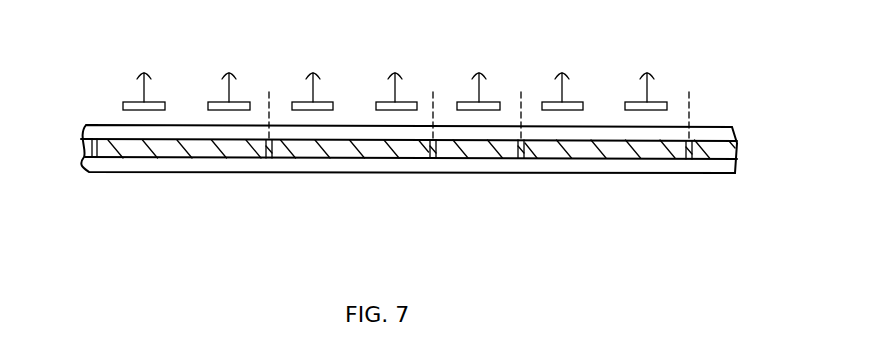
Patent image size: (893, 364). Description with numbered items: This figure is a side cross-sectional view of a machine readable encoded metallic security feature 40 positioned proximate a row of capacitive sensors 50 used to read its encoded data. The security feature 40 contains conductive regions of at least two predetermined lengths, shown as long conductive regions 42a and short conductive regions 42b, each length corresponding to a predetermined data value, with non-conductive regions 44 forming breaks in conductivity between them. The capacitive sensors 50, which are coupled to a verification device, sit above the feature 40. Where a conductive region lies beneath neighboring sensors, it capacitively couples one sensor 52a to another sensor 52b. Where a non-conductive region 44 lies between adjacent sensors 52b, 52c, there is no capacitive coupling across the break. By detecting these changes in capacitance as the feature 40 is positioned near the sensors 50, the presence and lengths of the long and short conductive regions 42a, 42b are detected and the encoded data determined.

The machine readable encoded metallic security feature 40 is at (743, 145).
The long conductive region 42a is at (205, 158).
The short conductive region 42b is at (473, 159).
The non-conductive region 44 is at (90, 170).
The capacitive sensors 50 is at (225, 71).
The sensor 52a is at (137, 102).
The sensor 52b is at (239, 102).
The sensor 52c is at (323, 103).